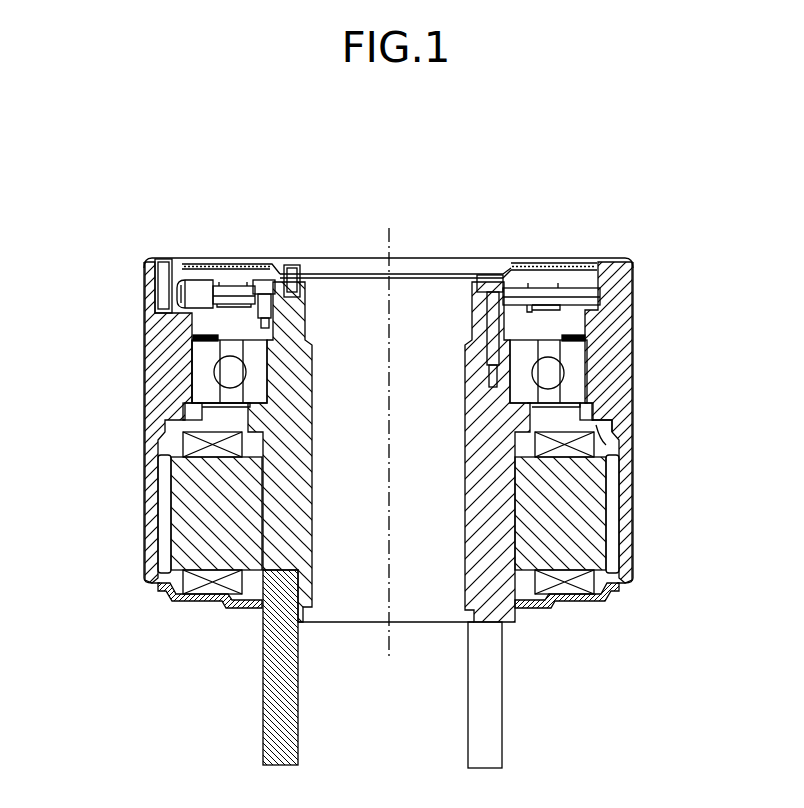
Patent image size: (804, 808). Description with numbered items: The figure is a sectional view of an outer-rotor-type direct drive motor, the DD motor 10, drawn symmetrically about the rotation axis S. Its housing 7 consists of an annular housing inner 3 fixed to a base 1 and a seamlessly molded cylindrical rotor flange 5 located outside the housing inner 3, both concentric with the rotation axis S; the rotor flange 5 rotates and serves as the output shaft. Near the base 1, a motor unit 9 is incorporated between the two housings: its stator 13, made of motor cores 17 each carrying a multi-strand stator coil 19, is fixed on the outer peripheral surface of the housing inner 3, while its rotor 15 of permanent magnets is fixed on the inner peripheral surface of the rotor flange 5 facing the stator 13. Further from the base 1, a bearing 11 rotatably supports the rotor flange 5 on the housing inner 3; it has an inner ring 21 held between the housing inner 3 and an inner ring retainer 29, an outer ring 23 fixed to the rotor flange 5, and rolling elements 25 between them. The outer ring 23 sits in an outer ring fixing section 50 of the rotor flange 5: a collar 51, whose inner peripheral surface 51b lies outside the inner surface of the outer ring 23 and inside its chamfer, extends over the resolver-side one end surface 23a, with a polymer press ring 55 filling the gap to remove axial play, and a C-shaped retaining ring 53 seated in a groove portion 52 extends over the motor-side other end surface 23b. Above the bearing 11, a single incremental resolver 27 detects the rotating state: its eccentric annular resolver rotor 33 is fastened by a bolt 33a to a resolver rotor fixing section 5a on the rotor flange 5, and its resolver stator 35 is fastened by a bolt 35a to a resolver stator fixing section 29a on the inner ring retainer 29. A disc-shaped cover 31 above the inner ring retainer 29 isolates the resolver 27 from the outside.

The base 1 is at (566, 612).
The housing inner 3 is at (500, 480).
The rotor flange 5 is at (627, 442).
The resolver rotor fixing section 5a is at (150, 290).
The housing 7 is at (436, 515).
The motor unit 9 is at (385, 520).
The DD motor 10 is at (385, 453).
The bearing 11 is at (155, 393).
The stator 13 is at (370, 520).
The rotor 15 is at (620, 515).
The motor core 17 is at (190, 522).
The stator coil 19 is at (162, 588).
The inner ring 21 is at (258, 350).
The outer ring 23 is at (151, 393).
The axial-direction one end surface 23a is at (193, 333).
The axial-direction other end surface 23b is at (205, 397).
The rolling element 25 is at (215, 372).
The resolver 27 is at (328, 233).
The inner ring retainer 29 is at (385, 254).
The resolver stator fixing section 29a is at (278, 270).
The cover 31 is at (510, 262).
The resolver rotor 33 is at (212, 254).
The bolt 33a is at (208, 285).
The resolver stator 35 is at (239, 256).
The bolt 35a is at (262, 280).
The outer ring fixing section 50 is at (587, 380).
The collar 51 is at (592, 331).
The inner peripheral surface 51b is at (600, 300).
The groove portion 52 is at (600, 437).
The C-shaped retaining ring 53 is at (594, 410).
The press ring 55 is at (590, 340).
The rotation axis S is at (395, 243).